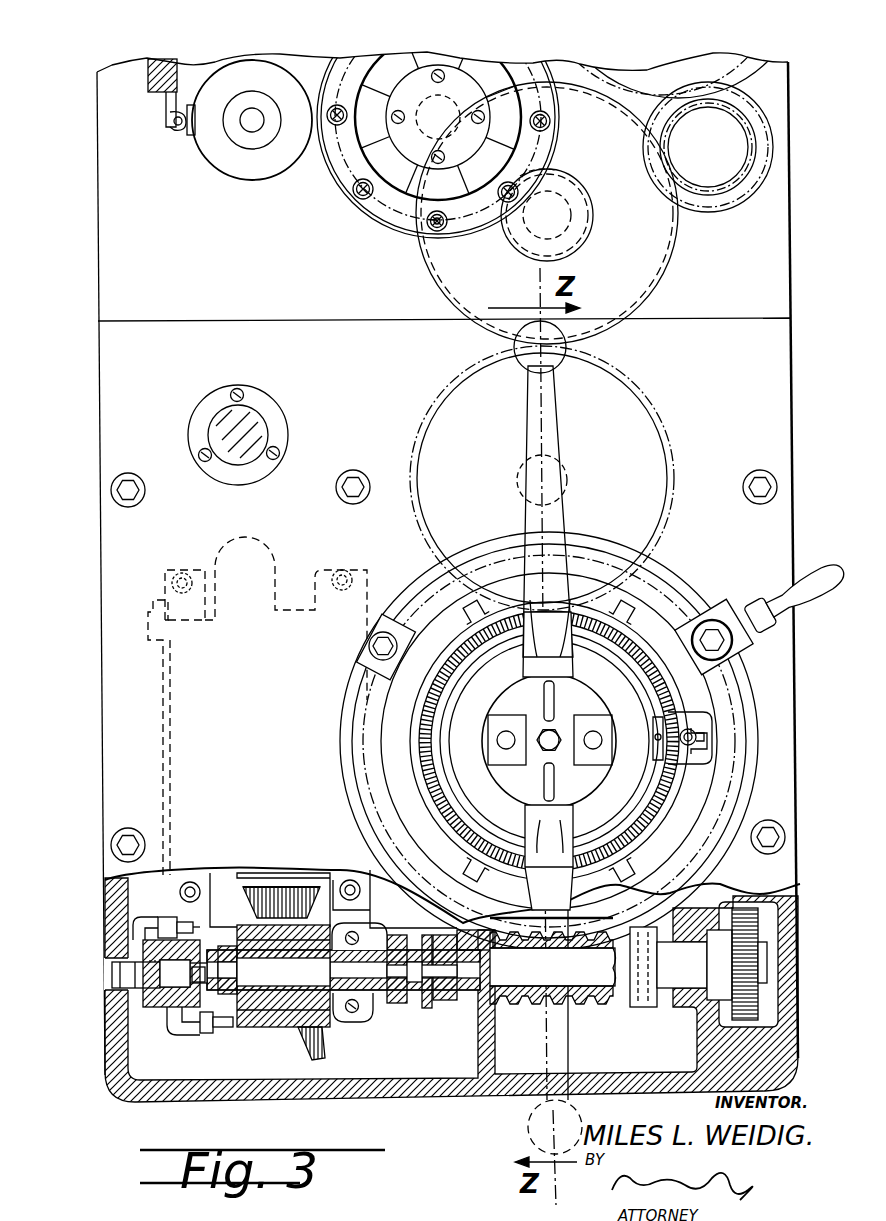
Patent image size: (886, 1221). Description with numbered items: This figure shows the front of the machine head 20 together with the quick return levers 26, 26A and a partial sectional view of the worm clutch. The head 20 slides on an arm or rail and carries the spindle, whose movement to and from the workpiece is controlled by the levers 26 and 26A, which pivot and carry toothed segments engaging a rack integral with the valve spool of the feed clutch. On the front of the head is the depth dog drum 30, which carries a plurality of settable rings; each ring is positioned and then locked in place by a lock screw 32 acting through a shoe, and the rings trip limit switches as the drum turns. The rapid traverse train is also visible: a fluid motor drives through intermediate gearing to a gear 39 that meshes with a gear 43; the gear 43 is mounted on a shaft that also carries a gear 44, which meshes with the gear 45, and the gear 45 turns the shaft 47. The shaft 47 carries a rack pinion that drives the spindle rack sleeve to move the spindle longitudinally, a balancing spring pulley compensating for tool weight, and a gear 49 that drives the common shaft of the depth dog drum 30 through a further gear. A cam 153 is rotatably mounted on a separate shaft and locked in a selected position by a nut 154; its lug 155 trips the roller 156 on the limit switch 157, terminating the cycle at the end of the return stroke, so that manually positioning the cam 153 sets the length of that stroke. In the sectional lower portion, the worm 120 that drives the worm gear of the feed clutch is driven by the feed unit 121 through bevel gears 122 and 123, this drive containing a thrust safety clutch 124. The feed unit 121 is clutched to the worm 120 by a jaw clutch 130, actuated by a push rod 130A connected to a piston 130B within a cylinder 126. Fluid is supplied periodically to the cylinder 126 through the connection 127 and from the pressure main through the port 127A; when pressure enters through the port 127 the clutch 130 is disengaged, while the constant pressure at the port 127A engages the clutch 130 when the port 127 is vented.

The head 20 is at (133, 267).
The lever 26 is at (566, 341).
The lever 26A is at (530, 1129).
The depth dog drum 30 is at (340, 187).
The lock screw 32 is at (415, 237).
The gear 39 is at (745, 70).
The gear 43 is at (767, 110).
The gear 44 is at (725, 194).
The gear 45 is at (668, 284).
The shaft 47 is at (576, 223).
The gear 49 is at (573, 176).
The worm 120 is at (605, 1005).
The feed unit 121 is at (275, 560).
The bevel gear 122 is at (328, 1043).
The bevel gear 123 is at (284, 878).
The thrust safety clutch 124 is at (273, 1028).
The cylinder 126 is at (120, 1004).
The connection 127 is at (143, 922).
The port 127A is at (180, 1024).
The jaw clutch 130 is at (452, 1008).
The push rod 130A is at (364, 968).
The piston 130B is at (148, 976).
The cam 153 is at (256, 70).
The nut 154 is at (249, 140).
The lug 155 is at (192, 138).
The roller 156 is at (175, 130).
The limit switch 157 is at (148, 65).